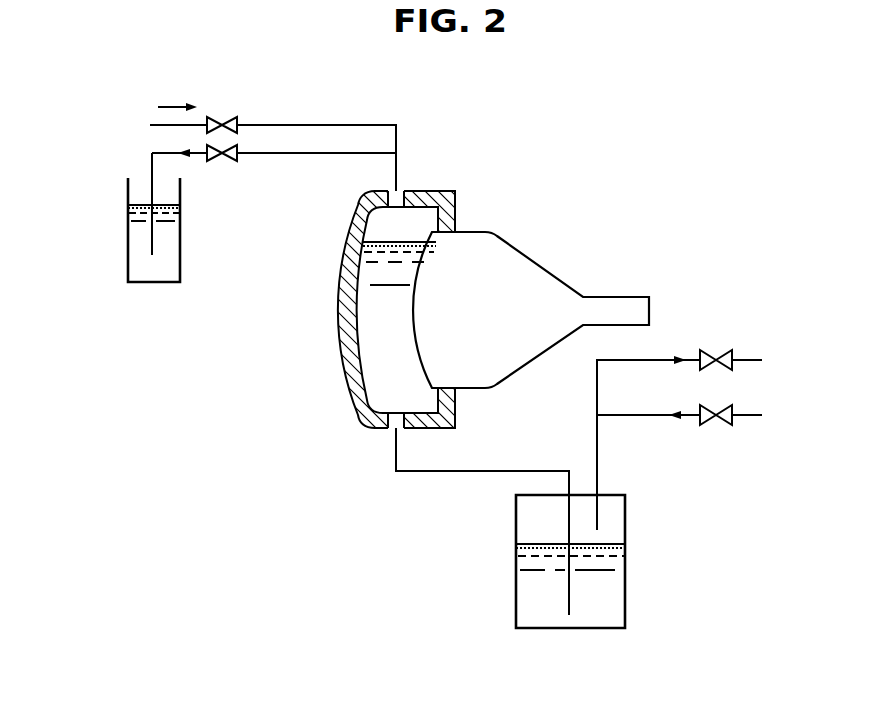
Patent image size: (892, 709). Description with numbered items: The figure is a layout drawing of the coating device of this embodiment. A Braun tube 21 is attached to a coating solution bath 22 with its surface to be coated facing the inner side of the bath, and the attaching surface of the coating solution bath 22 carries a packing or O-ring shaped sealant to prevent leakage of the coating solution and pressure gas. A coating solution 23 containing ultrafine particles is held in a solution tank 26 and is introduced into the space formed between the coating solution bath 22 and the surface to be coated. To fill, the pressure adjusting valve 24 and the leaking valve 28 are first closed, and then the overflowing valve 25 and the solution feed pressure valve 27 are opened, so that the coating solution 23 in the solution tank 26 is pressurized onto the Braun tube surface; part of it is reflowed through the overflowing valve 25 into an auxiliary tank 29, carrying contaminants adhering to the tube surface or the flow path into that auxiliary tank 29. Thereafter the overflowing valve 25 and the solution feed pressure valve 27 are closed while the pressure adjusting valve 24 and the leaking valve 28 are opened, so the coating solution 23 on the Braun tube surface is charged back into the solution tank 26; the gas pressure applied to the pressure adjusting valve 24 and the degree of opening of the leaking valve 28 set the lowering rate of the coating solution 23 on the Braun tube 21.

The Braun tube 21 is at (527, 278).
The coating solution bath 22 is at (346, 288).
The coating solution 23 is at (382, 383).
The pressure adjusting valve 24 is at (233, 119).
The overflowing valve 25 is at (235, 160).
The solution tank 26 is at (608, 595).
The solution feed pressure valve 27 is at (720, 423).
The leaking valve 28 is at (727, 348).
The auxiliary tank 29 is at (165, 270).